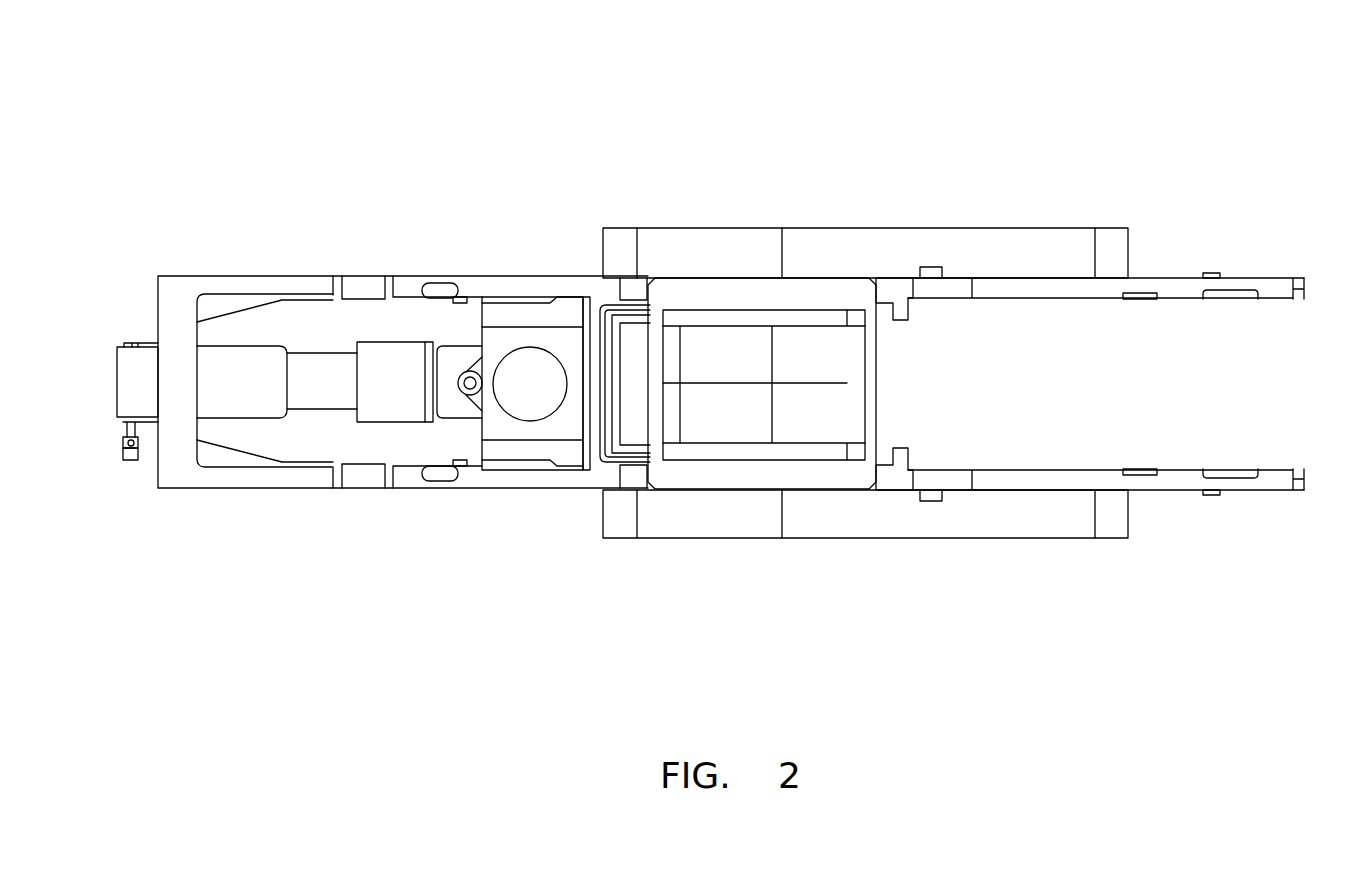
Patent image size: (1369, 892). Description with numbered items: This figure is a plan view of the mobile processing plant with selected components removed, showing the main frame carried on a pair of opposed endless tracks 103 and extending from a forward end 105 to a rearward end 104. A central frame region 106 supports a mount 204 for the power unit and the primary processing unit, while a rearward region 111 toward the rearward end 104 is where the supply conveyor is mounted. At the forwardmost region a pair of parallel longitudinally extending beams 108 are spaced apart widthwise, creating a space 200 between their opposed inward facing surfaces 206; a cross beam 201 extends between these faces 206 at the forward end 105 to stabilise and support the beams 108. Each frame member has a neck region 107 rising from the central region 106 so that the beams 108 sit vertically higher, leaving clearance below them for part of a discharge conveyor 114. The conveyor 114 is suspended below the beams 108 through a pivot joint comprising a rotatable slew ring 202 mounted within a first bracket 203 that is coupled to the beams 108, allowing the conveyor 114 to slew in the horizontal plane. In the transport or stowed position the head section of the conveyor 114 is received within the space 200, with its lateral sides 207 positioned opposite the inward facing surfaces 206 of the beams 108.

The endless tracks 103 is at (1015, 253).
The rearward end 104 is at (1304, 283).
The forward end 105 is at (157, 303).
The central frame region 106 is at (893, 292).
The neck region 107 is at (603, 477).
The beam 108 is at (309, 285).
The rearward region 111 is at (1172, 288).
The discharge conveyor 114 is at (310, 420).
The space 200 is at (362, 322).
The cross beam 201 is at (177, 443).
The slew ring 202 is at (503, 370).
The first bracket 203 is at (485, 430).
The mount 204 is at (712, 473).
The inward facing surfaces 206 is at (309, 327).
The lateral sides 207 is at (238, 342).